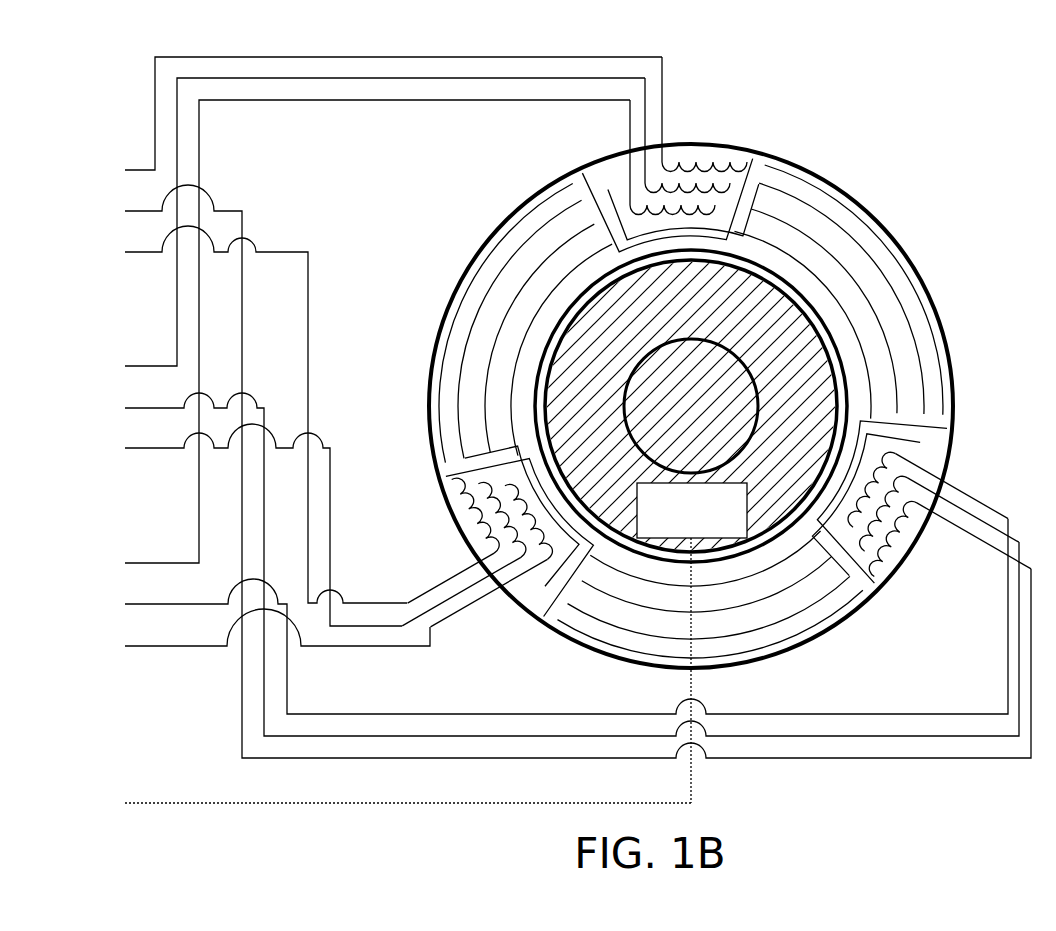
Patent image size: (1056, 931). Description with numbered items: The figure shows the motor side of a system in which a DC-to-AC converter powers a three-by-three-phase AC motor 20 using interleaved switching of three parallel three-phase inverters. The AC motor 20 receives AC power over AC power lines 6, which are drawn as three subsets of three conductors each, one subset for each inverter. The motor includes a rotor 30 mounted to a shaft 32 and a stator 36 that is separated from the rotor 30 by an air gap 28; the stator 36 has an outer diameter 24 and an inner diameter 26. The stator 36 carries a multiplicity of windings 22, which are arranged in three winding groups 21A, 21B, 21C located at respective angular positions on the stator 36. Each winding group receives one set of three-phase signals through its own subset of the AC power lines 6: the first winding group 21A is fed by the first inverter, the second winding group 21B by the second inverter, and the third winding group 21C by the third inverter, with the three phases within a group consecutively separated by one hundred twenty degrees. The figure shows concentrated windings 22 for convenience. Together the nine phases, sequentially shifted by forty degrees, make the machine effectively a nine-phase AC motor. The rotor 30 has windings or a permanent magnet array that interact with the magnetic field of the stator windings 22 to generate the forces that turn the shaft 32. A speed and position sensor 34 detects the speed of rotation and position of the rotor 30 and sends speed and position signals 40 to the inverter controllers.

The AC power lines 6 is at (494, 40).
The 3×3-phase AC motor 20 is at (508, 194).
The winding group 21A is at (697, 133).
The winding group 21B is at (908, 577).
The winding group 21C is at (452, 548).
The windings 22 is at (700, 165).
The outer diameter 24 is at (838, 185).
The inner diameter 26 is at (793, 287).
The air gap 28 is at (828, 343).
The rotor 30 is at (805, 420).
The shaft 32 is at (707, 447).
The speed and position sensor 34 is at (720, 540).
The stator 36 is at (470, 267).
The speed and position signals 40 is at (228, 802).